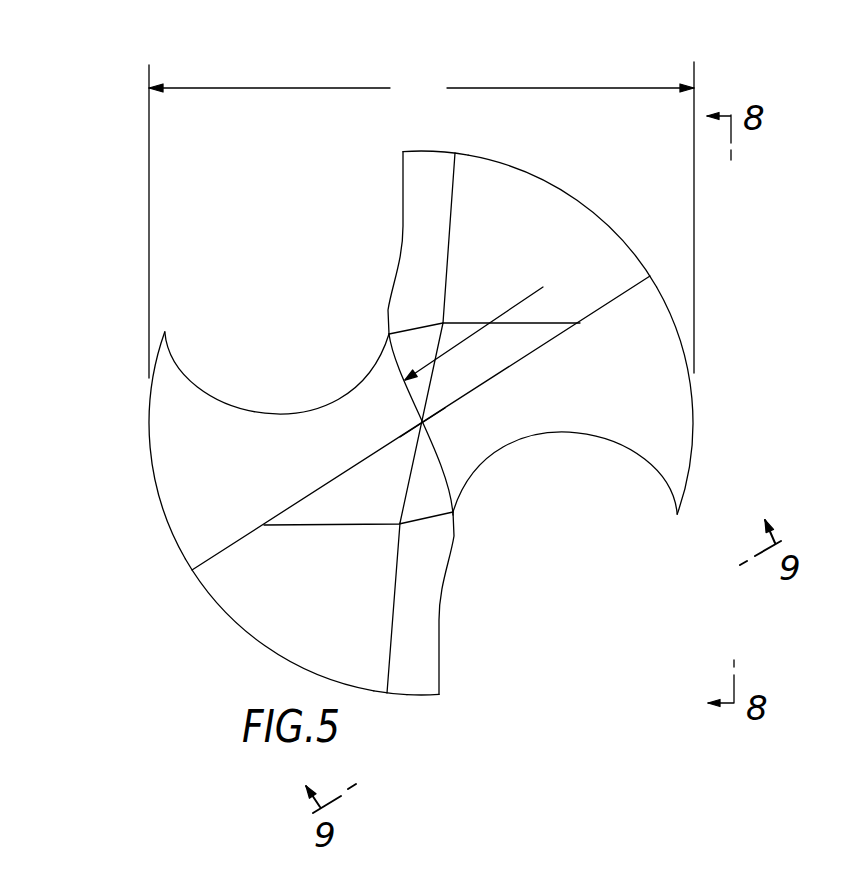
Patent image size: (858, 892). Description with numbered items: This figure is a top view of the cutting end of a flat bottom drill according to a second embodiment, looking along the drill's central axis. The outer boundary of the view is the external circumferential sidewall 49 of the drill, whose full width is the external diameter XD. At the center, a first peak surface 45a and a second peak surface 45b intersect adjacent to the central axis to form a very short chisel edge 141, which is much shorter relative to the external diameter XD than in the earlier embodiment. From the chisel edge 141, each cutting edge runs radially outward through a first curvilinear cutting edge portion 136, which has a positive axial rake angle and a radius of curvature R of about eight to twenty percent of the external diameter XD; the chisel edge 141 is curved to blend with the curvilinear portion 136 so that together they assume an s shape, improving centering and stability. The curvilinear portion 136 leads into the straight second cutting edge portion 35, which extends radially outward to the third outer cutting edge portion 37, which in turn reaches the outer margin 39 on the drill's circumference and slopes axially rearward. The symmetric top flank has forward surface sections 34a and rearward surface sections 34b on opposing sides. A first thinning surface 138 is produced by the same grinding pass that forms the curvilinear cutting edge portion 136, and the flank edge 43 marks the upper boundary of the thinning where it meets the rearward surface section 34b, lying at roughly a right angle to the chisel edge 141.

The straight second cutting edge portion 35 is at (403, 226).
The third outer cutting edge portion 37 is at (403, 167).
The outer margin 39 is at (420, 697).
The flank edge 43 is at (313, 494).
The first peak surface 45a is at (425, 493).
The second peak surface 45b is at (418, 340).
The forward surface section of top flank 34a is at (396, 612).
The rearward surface section of top flank 34b is at (273, 630).
The sidewall 49 is at (680, 442).
The first curvilinear cutting edge portion 136 is at (404, 391).
The first thinning surface 138 is at (662, 374).
The chisel edge 141 is at (419, 426).
The radius of curvature R is at (543, 287).
The external diameter XD is at (421, 220).